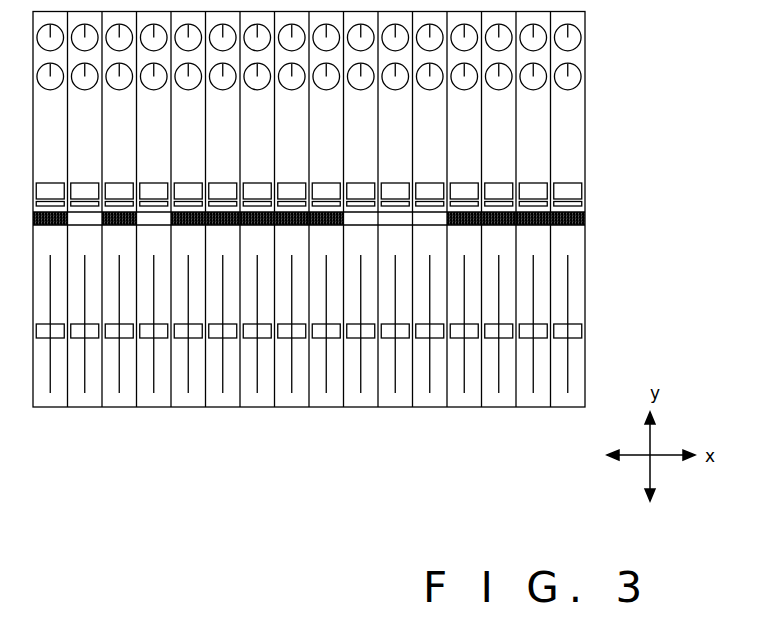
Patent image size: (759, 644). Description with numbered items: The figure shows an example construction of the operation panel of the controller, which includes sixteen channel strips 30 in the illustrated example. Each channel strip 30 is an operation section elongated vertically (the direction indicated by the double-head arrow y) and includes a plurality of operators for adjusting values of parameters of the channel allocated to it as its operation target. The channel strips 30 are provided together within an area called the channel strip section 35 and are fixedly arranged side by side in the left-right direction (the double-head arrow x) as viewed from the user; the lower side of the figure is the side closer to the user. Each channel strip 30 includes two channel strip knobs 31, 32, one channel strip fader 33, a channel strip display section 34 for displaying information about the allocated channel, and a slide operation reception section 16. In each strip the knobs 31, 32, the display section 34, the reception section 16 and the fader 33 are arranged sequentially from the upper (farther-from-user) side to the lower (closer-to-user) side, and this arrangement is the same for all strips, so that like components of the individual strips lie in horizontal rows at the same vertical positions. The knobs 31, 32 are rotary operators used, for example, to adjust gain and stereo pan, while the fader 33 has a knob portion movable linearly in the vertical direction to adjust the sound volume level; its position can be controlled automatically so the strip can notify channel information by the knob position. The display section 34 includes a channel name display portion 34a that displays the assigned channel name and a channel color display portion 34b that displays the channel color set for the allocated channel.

The slide operation reception section 16 is at (587, 217).
The channel strip 30 is at (355, 246).
The channel strip knob 31 is at (577, 34).
The channel strip knob 32 is at (578, 73).
The channel strip fader 33 is at (581, 326).
The channel strip display section 34 is at (356, 159).
The channel name display portion 34a is at (585, 183).
The channel color display portion 34b is at (585, 198).
The channel strip section 35 is at (353, 272).